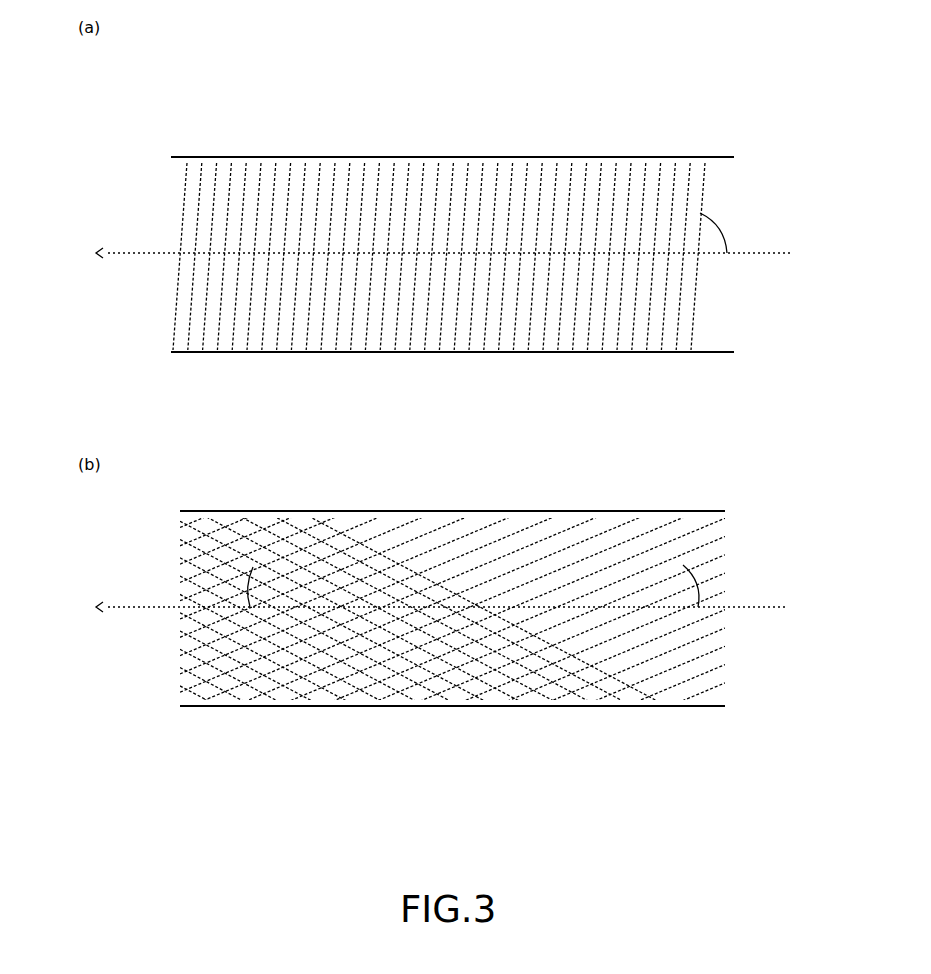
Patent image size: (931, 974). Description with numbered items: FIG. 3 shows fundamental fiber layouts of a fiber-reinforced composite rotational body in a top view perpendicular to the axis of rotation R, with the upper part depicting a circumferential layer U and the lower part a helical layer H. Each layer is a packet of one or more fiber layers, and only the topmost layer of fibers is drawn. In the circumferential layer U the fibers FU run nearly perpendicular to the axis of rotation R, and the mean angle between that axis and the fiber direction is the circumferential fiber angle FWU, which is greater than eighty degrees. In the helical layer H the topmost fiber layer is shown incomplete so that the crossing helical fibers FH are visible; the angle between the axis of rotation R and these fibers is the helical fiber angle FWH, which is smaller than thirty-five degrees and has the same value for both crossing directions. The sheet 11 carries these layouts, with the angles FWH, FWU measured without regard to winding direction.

The fiber reinforced sheet 11 is at (396, 106).
The circumferential fibers FU is at (174, 204).
The circumferential fiber angle FWU is at (712, 241).
The axis of rotation R is at (417, 430).
The circumferential layer U is at (443, 256).
The helical fibers FH is at (162, 553).
The helical fiber angle FWH is at (268, 581).
The helical layer H is at (425, 636).